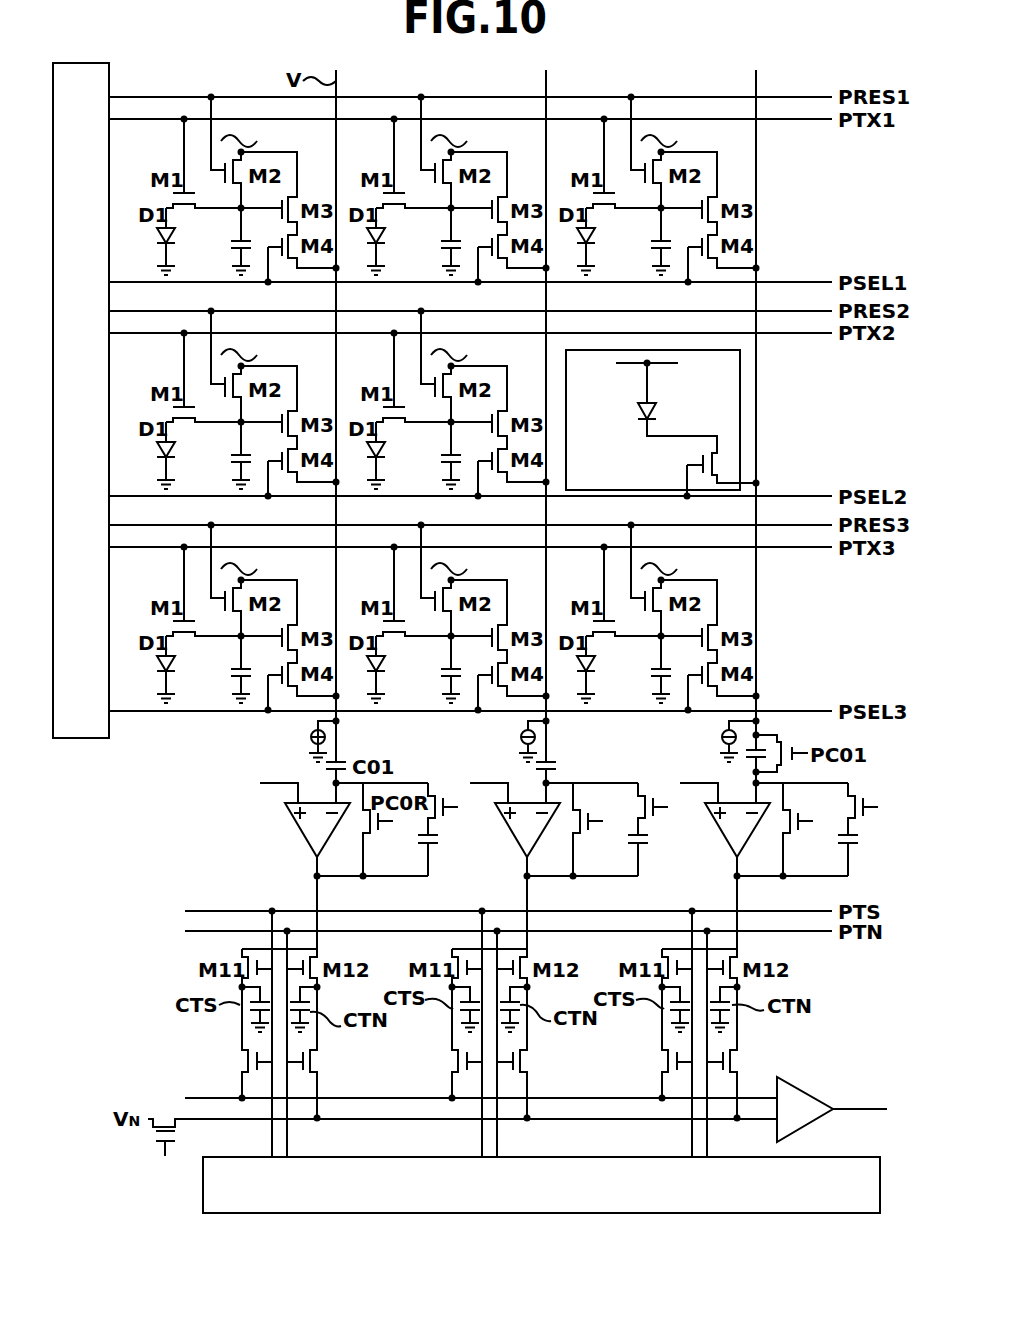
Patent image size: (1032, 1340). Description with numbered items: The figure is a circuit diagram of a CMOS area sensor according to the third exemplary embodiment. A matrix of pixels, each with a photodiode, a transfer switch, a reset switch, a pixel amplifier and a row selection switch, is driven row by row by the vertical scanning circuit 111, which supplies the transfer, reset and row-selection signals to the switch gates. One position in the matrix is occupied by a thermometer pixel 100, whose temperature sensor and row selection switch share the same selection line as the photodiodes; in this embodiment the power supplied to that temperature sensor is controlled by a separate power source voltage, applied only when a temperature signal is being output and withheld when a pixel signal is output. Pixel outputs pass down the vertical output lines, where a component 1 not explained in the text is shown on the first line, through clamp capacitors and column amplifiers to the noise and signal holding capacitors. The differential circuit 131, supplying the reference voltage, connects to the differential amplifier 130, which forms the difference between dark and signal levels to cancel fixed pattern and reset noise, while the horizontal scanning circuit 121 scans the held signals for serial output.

The constant current source 1 is at (307, 739).
The thermometer pixel 100 is at (740, 400).
The vertical scanning circuit 111 is at (80, 738).
The horizontal scanning circuit 121 is at (553, 1157).
The differential amplifier 130 is at (806, 1090).
The differential circuit 131 is at (190, 1122).